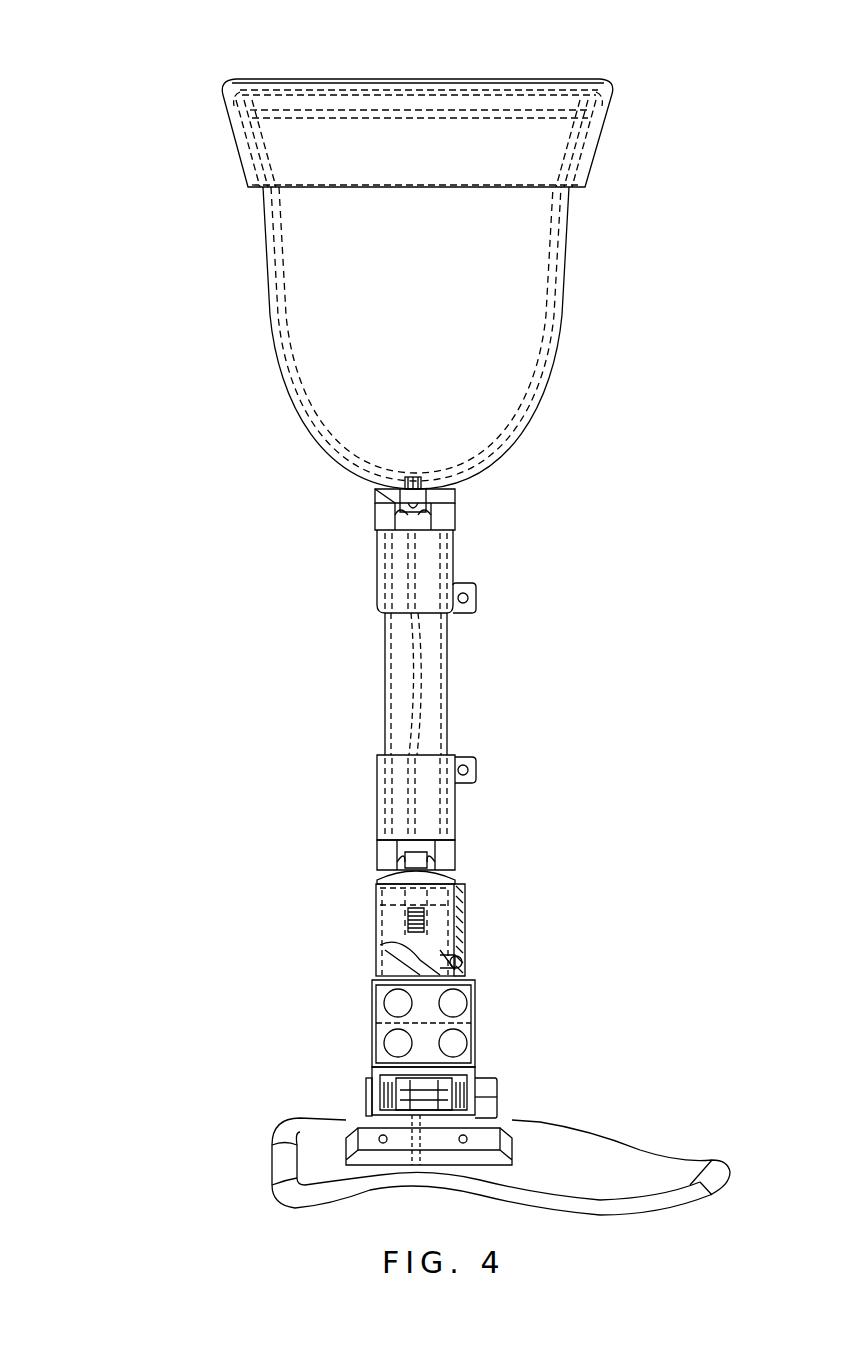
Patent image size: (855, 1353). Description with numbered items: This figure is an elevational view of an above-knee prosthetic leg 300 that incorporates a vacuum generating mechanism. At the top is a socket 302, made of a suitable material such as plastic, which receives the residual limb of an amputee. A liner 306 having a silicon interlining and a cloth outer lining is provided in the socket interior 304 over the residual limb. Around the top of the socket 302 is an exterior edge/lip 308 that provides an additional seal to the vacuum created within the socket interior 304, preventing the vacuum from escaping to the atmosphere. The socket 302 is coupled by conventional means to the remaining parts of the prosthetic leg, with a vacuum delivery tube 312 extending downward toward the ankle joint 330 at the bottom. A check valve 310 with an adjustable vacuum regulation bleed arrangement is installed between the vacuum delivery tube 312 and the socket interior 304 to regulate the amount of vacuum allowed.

The above-knee prosthetic leg 300 is at (470, 75).
The socket 302 is at (553, 370).
The socket interior 304 is at (365, 262).
The liner 306 is at (582, 100).
The exterior edge/lip 308 is at (240, 82).
The check valve 310 is at (448, 490).
The vacuum delivery tube 312 is at (430, 711).
The ankle joint 330 is at (517, 1025).